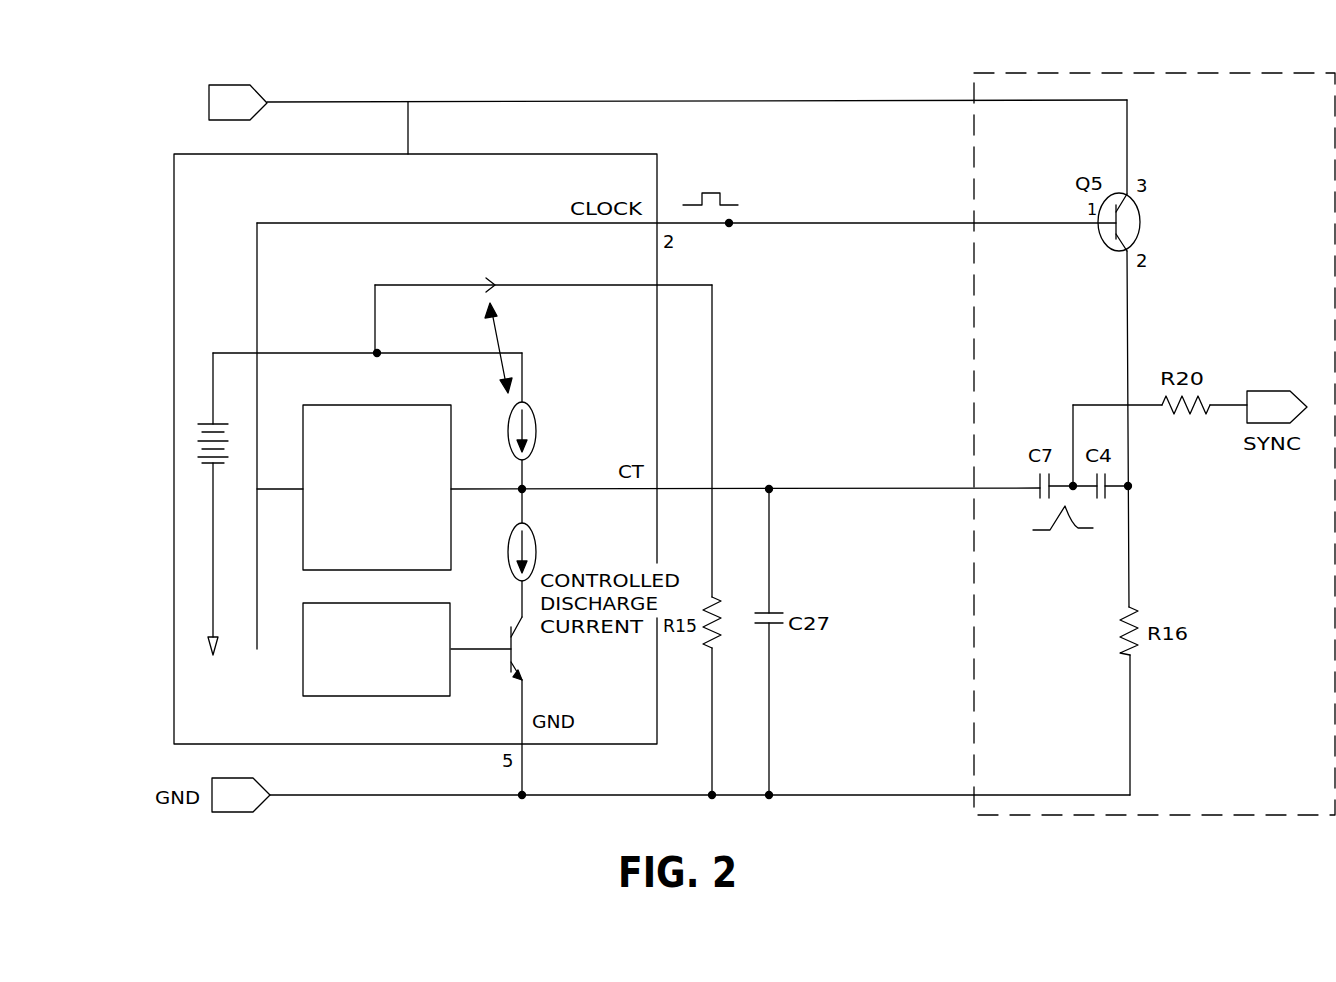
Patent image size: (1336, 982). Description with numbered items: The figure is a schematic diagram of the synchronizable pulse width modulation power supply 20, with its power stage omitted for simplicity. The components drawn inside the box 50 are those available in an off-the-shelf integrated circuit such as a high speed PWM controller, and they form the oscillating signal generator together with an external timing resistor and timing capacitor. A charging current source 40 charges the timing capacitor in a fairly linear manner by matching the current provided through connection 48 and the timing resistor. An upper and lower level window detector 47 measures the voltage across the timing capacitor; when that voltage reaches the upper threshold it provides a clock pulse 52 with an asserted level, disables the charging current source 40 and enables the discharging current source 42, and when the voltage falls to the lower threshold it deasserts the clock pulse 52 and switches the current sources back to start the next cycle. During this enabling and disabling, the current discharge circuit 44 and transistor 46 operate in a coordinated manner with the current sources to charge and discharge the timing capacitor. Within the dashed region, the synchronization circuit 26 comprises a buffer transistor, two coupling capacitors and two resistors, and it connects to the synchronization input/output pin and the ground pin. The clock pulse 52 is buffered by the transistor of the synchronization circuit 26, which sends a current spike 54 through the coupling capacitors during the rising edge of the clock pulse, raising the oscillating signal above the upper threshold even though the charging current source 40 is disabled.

The power supply 20 is at (521, 84).
The synchronization circuit 26 is at (1212, 210).
The charging current source 40 is at (536, 420).
The discharging current source 42 is at (536, 541).
The current discharge circuit 44 is at (335, 697).
The transistor 46 is at (520, 673).
The window detector 47 is at (345, 405).
The connection 48 is at (577, 285).
The box 50 is at (174, 670).
The clock pulse 52 is at (730, 203).
The current spike 54 is at (1058, 525).